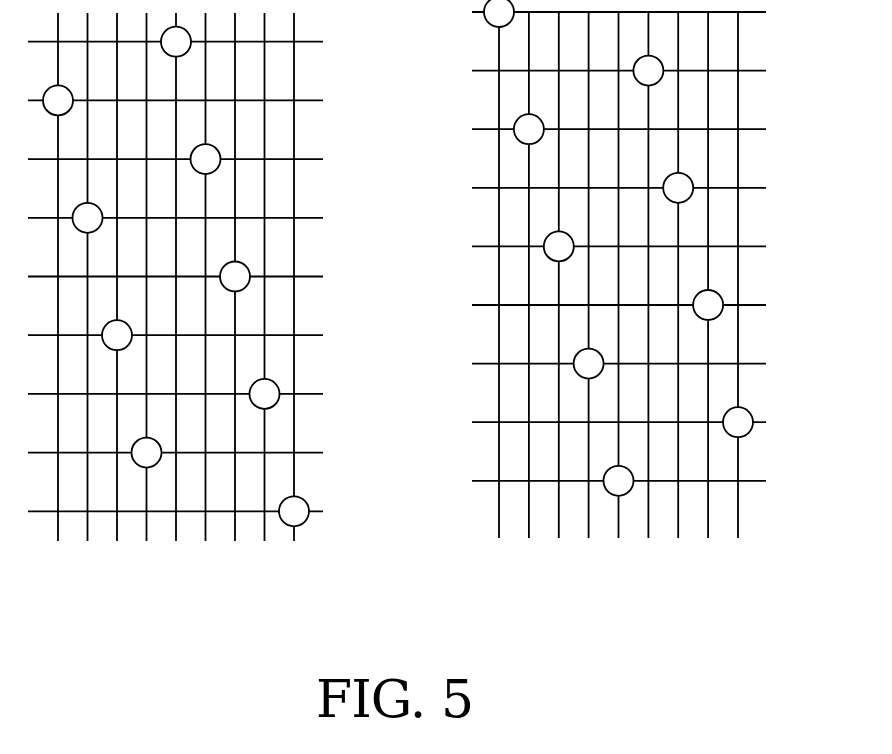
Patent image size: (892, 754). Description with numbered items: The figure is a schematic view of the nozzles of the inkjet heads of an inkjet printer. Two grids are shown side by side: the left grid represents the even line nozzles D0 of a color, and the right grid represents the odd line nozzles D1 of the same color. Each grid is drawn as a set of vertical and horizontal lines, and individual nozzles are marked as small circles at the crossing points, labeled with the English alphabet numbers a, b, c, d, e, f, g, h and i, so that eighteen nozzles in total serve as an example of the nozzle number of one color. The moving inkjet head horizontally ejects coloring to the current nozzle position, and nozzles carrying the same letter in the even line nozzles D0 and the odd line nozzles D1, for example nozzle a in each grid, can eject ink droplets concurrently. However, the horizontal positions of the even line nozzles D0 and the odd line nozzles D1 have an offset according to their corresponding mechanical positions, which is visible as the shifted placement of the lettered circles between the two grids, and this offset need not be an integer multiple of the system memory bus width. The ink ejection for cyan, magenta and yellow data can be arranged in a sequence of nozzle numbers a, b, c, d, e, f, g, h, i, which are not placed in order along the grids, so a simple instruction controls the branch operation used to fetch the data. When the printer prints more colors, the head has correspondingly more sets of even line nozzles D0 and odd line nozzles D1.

The even line nozzles D0 is at (175, 317).
The odd line nozzles D1 is at (619, 316).
The nozzle a is at (278, 58).
The nozzle b is at (308, 174).
The nozzle c is at (338, 291).
The nozzle d is at (368, 409).
The nozzle e is at (397, 262).
The nozzle f is at (427, 116).
The nozzle g is at (456, 233).
The nozzle h is at (487, 350).
The nozzle i is at (516, 467).